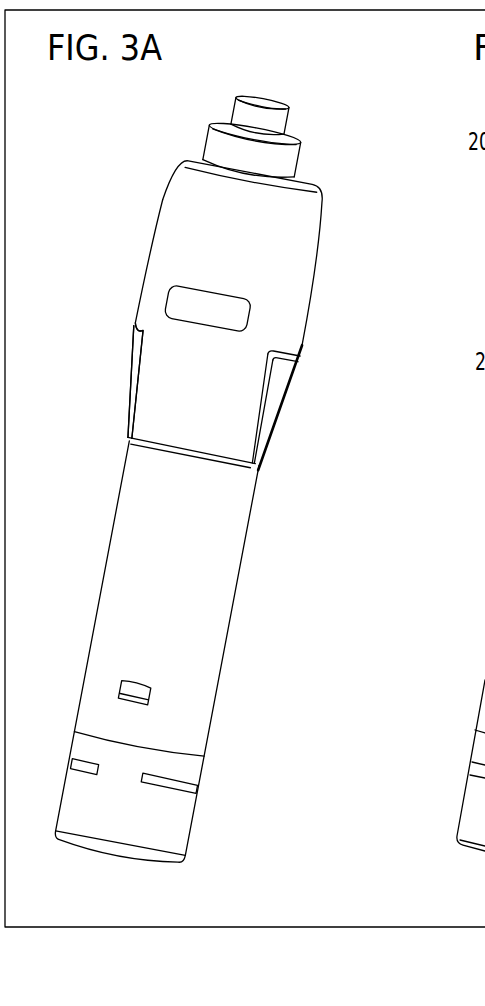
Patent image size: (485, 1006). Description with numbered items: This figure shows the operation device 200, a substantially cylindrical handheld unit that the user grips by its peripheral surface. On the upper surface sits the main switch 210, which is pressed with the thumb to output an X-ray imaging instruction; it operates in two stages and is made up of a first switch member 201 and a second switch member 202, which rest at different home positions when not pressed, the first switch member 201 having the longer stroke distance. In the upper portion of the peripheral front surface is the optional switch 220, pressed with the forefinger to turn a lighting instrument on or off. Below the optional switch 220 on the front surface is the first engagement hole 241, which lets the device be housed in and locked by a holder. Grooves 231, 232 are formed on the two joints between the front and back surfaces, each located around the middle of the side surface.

The operation device 200 is at (116, 150).
The first switch member 201 is at (288, 110).
The second switch member 202 is at (297, 161).
The main switch 210 is at (316, 132).
The optional switch 220 is at (240, 317).
The groove 231 is at (275, 407).
The groove 232 is at (131, 359).
The first engagement hole 241 is at (147, 690).